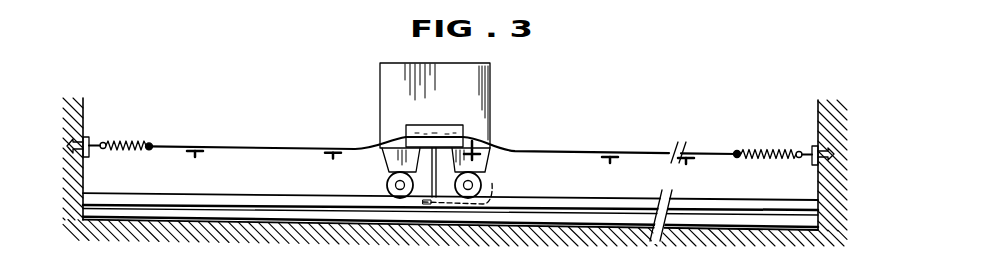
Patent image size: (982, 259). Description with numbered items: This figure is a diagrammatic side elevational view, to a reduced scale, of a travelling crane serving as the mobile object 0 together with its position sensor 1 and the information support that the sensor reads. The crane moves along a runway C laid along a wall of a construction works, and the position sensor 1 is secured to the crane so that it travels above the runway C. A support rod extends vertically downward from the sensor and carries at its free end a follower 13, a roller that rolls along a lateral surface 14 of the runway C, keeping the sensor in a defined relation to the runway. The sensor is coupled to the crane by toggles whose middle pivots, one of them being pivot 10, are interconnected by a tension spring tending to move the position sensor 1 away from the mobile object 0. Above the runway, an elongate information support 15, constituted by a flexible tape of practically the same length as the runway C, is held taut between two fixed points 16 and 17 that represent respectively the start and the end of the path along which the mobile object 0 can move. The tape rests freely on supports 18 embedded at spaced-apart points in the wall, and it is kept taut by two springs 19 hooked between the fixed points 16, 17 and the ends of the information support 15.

The middle pivot 10 is at (453, 128).
The housing / carriage body (partially printed numeral 10) 0 is at (491, 89).
The position sensor 1 is at (420, 124).
The follower 13 is at (491, 191).
The lateral surface 14 is at (530, 203).
The information support 15 is at (260, 143).
The fixed point 16 is at (72, 140).
The fixed point 17 is at (818, 132).
The supports 18 is at (196, 154).
The springs 19 is at (128, 142).
The runway C is at (321, 193).